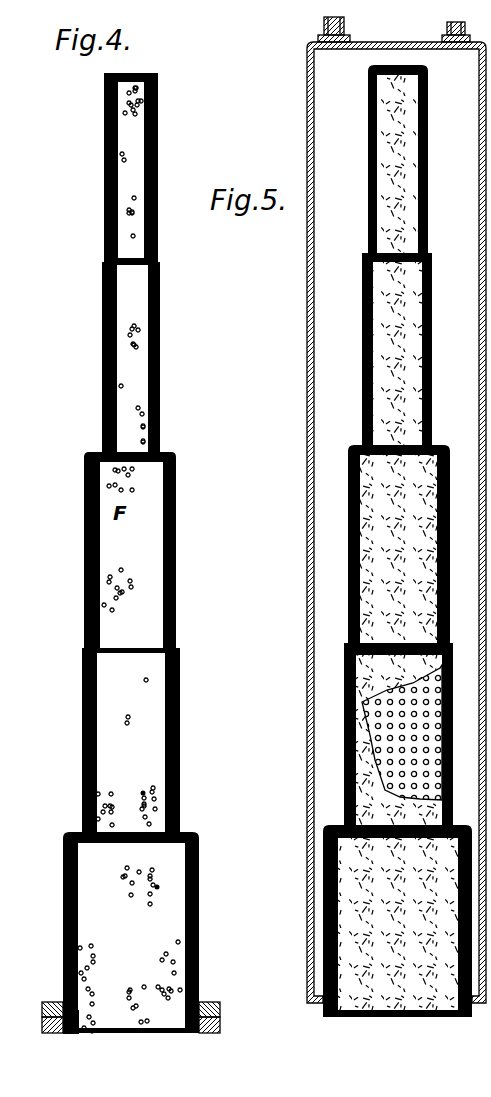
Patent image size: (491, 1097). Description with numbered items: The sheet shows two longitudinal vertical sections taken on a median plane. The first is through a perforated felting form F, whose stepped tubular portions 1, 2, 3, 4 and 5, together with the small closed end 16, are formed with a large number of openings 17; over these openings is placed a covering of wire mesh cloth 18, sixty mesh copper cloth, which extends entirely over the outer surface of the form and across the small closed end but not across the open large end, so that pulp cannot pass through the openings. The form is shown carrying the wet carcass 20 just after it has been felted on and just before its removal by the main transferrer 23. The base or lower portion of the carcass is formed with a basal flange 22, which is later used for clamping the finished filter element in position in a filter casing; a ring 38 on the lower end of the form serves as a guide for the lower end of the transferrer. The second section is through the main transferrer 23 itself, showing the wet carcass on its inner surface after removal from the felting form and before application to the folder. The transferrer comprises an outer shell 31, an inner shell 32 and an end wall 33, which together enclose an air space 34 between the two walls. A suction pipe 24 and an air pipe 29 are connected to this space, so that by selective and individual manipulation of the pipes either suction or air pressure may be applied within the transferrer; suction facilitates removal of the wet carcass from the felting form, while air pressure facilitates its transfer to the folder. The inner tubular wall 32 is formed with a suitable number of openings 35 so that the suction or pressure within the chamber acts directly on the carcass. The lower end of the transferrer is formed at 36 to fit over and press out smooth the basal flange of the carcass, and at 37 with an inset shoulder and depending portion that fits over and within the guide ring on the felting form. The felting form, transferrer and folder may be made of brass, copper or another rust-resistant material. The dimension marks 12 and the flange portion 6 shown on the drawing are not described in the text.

In FIG. 4, the tubular portion 1 is at (105, 157).
In FIG. 4, the tubular portion 2 is at (103, 338).
In FIG. 4, the tubular portion 3 is at (88, 545).
In FIG. 4, the tubular portion 4 is at (84, 713).
In FIG. 4, the tubular portion 5 is at (67, 860).
In FIG. 4, the base flange 6 is at (221, 1026).
In FIG. 4, the flange height dimension 12 is at (32, 900).
In FIG. 4, the closed end 16 is at (145, 75).
In FIG. 4, the openings 17 is at (112, 92).
In FIG. 4, the wire mesh cloth 18 is at (150, 120).
In FIG. 4, the wet carcass 20 is at (108, 190).
In FIG. 5, the wet carcass 20 is at (362, 481).
In FIG. 4, the basal flange 22 is at (55, 1010).
In FIG. 5, the basal flange 22 is at (460, 1018).
In FIG. 5, the main transferrer 23 is at (306, 312).
In FIG. 5, the suction pipe 24 is at (446, 28).
In FIG. 5, the air pipe 29 is at (322, 26).
In FIG. 5, the outer shell 31 is at (484, 208).
In FIG. 5, the inner shell 32 is at (431, 316).
In FIG. 5, the end wall 33 is at (378, 44).
In FIG. 5, the air space 34 is at (350, 161).
In FIG. 5, the openings 35 is at (428, 112).
In FIG. 5, the lower end formation 36 is at (340, 1020).
In FIG. 5, the inset shoulder and depending portion 37 is at (316, 1004).
In FIG. 4, the ring 38 is at (221, 1005).